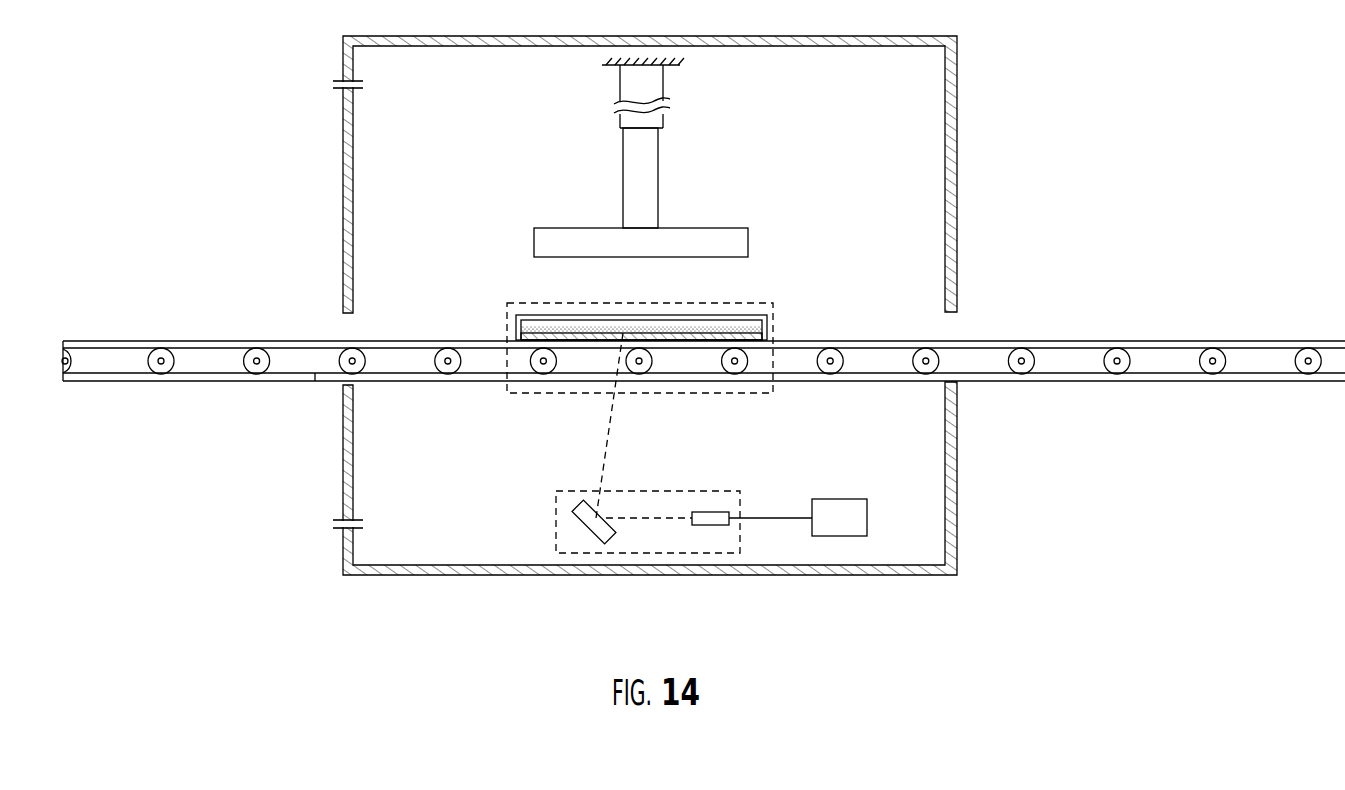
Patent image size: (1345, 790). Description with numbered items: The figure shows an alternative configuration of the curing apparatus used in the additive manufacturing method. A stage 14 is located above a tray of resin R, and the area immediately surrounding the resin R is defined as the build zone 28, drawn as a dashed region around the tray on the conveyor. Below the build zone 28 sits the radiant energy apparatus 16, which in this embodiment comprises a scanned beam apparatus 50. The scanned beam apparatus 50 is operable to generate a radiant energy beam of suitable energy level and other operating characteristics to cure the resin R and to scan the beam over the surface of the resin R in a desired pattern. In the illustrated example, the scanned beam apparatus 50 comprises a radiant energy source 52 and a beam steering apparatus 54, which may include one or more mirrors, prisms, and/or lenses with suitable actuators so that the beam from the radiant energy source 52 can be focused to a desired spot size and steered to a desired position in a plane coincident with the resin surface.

The stage 14 is at (683, 237).
The resin R is at (703, 332).
The build zone 28 is at (758, 395).
The scanned beam apparatus 50 is at (556, 536).
The radiant energy source 52 is at (709, 517).
The beam steering apparatus 54 is at (588, 528).
The radiant energy apparatus 16 is at (757, 484).